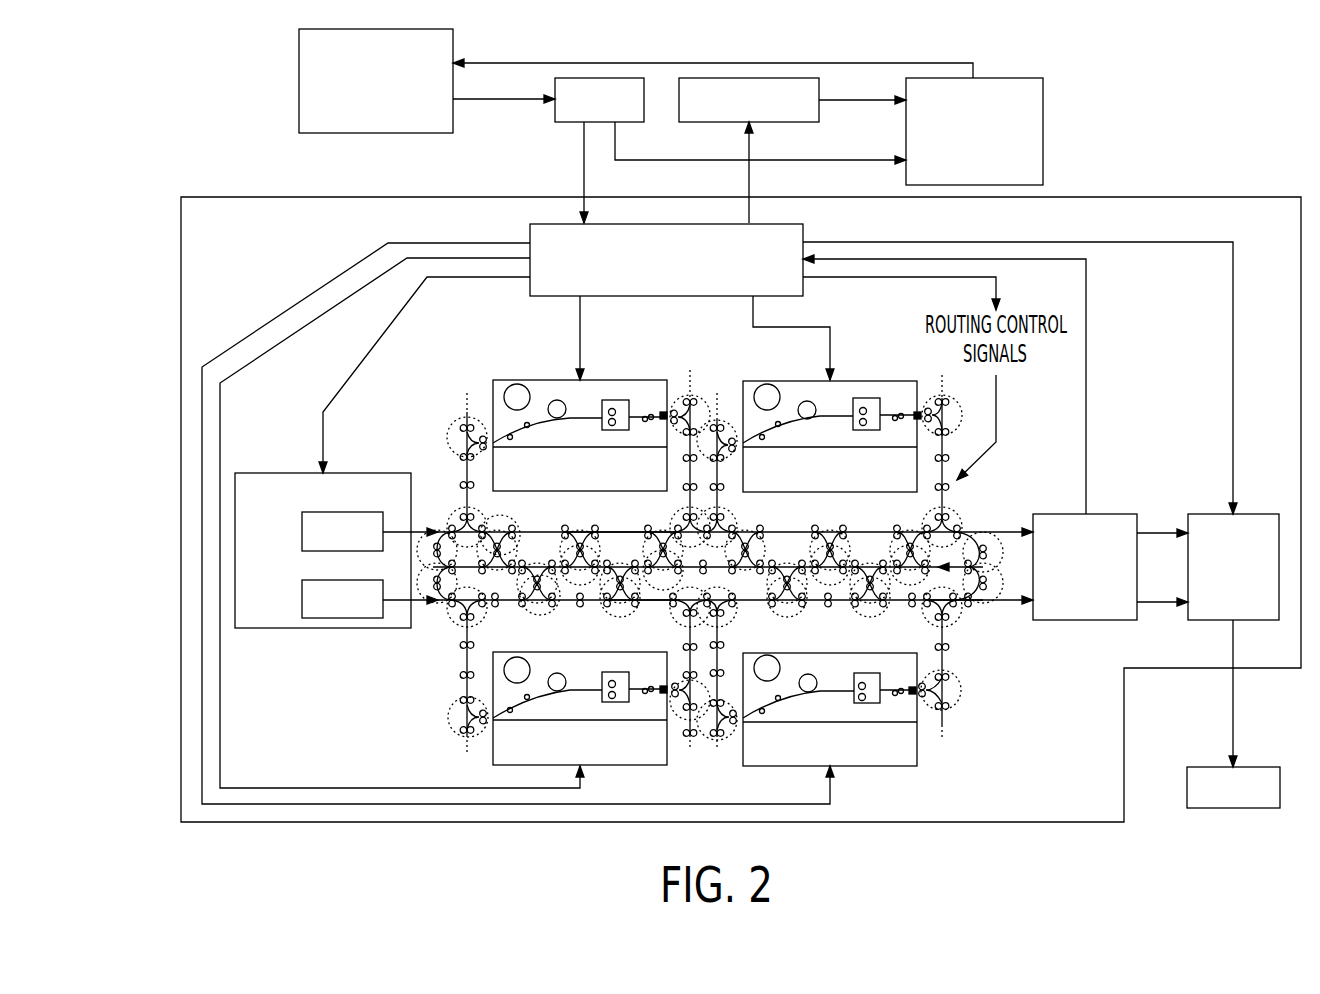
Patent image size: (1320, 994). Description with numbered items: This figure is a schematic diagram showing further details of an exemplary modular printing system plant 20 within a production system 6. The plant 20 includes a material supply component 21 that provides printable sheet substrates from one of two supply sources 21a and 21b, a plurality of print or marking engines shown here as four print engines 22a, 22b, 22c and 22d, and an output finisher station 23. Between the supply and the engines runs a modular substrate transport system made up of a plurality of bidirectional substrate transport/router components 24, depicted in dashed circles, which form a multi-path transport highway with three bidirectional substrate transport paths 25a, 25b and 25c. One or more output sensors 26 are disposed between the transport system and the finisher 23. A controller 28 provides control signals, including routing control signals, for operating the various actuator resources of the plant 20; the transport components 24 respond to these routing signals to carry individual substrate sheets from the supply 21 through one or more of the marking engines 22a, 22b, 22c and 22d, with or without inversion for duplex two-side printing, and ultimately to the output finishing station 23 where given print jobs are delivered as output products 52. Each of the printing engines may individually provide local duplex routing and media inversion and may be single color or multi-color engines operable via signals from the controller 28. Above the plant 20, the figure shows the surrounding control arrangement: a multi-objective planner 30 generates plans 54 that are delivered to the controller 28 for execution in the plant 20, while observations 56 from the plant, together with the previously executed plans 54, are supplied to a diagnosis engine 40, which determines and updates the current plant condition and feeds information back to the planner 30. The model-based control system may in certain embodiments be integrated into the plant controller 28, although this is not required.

The production system 6 is at (1168, 157).
The plant 20 is at (181, 348).
The material supply component 21 is at (300, 473).
The supply source 21a is at (302, 532).
The supply source 21b is at (302, 600).
The print engine 22a is at (553, 380).
The print engine 22b is at (892, 380).
The print engine 22c is at (647, 765).
The print engine 22d is at (867, 766).
The output finisher station 23 is at (1212, 514).
The substrate transport/router components 24 is at (448, 448).
The bidirectional substrate transport path 25a is at (622, 530).
The bidirectional substrate transport path 25b is at (650, 602).
The bidirectional substrate transport path 25c is at (958, 602).
The output sensors 26 is at (1068, 514).
The controller 28 is at (530, 292).
The multi-objective planner 30 is at (299, 83).
The diagnosis engine 40 is at (1043, 136).
The products 52 is at (1212, 766).
The plans 54 is at (563, 123).
The observations 56 is at (807, 123).